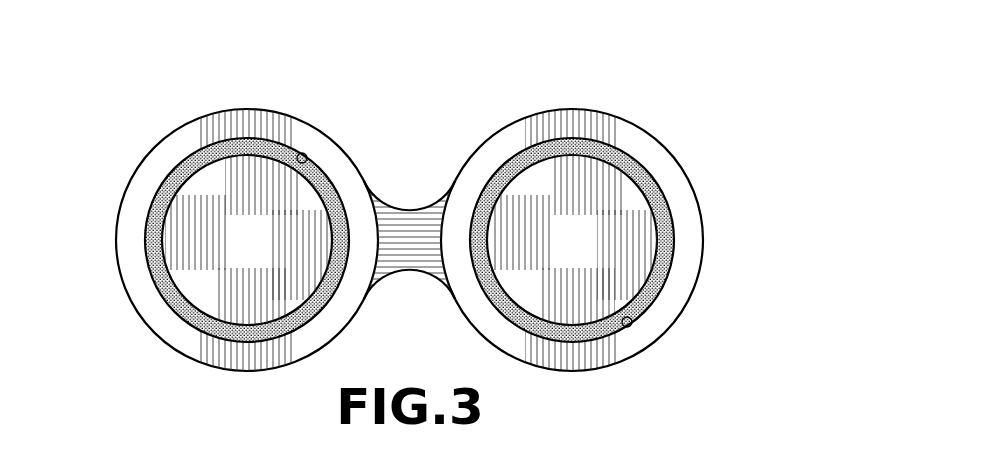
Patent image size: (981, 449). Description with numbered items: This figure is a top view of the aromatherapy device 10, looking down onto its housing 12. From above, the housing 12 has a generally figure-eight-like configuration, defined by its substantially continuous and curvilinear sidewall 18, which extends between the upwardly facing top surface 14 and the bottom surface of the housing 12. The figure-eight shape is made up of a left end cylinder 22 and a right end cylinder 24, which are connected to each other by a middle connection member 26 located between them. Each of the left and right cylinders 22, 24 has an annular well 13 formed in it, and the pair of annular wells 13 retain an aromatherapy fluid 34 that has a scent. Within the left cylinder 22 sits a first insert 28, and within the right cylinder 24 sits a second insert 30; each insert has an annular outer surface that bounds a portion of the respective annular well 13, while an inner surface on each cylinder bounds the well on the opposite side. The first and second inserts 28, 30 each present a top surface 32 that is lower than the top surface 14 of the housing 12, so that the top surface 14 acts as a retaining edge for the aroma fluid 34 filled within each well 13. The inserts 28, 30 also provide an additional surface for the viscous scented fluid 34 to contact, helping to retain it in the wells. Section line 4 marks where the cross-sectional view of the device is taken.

The aromatherapy device 10 is at (443, 207).
The housing 12 is at (674, 335).
The annular well 13 is at (306, 155).
The top surface 14 is at (193, 133).
The sidewall 18 is at (133, 308).
The left end cylinder 22 is at (410, 207).
The right end cylinder 24 is at (553, 186).
The middle connection member 26 is at (410, 215).
The first insert 28 is at (222, 195).
The second insert 30 is at (546, 195).
The top surface of insert 32 is at (239, 263).
The aromatherapy fluid 34 is at (197, 322).
The section line 4 is at (130, 240).